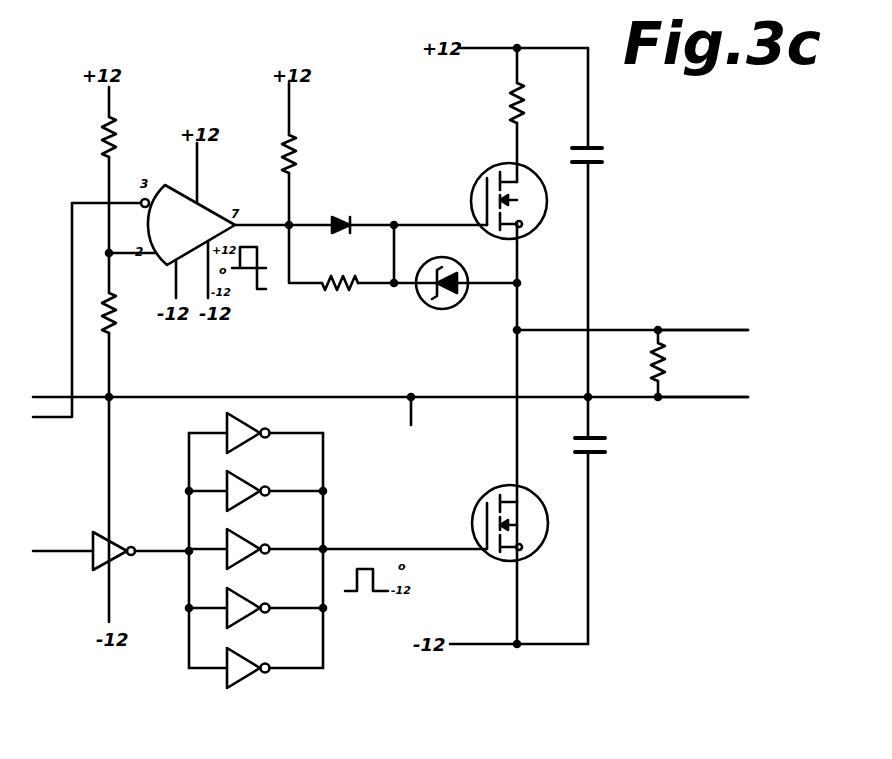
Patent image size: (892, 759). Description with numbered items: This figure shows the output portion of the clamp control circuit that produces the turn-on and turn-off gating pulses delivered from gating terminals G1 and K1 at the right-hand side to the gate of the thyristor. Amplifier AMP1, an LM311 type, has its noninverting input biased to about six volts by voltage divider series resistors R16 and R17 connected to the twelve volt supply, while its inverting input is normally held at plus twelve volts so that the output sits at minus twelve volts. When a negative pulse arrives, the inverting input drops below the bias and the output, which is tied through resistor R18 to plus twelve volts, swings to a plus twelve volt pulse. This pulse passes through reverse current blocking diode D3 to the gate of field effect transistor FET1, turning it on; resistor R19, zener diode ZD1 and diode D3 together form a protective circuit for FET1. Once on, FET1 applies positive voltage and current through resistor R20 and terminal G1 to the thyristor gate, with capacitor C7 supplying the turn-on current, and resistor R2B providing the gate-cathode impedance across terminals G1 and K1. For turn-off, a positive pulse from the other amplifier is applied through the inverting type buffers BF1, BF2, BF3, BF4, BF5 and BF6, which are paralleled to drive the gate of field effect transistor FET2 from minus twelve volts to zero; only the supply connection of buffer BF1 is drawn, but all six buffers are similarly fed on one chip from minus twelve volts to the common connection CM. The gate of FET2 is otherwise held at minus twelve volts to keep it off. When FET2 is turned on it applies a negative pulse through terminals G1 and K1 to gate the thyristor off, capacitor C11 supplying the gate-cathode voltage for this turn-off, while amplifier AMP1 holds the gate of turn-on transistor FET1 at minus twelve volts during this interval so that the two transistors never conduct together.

The voltage divider series resistor R16 is at (104, 137).
The voltage divider series resistor R17 is at (119, 314).
The resistor R18 is at (299, 149).
The resistor R19 is at (351, 294).
The resistor R20 is at (508, 103).
The resistor R2B is at (666, 358).
The capacitor C7 is at (604, 154).
The capacitor C11 is at (606, 446).
The reverse current blocking diode D3 is at (349, 213).
The zener diode ZD1 is at (450, 246).
The field effect transistor FET1 is at (478, 183).
The field effect transistor FET2 is at (475, 514).
The amplifier AMP1 is at (210, 206).
The inverting type buffer BF1 is at (102, 532).
The inverting type buffer BF2 is at (260, 424).
The inverting type buffer BF3 is at (257, 482).
The inverting type buffer BF4 is at (257, 540).
The inverting type buffer BF5 is at (257, 599).
The inverting type buffer BF6 is at (255, 659).
The gating terminal G1 is at (721, 331).
The gating terminal K1 is at (721, 398).
The common terminal CM is at (409, 424).